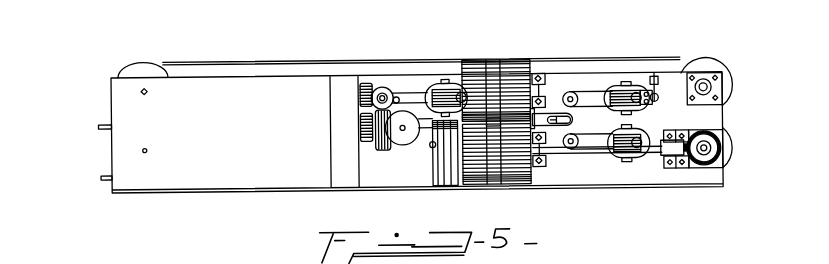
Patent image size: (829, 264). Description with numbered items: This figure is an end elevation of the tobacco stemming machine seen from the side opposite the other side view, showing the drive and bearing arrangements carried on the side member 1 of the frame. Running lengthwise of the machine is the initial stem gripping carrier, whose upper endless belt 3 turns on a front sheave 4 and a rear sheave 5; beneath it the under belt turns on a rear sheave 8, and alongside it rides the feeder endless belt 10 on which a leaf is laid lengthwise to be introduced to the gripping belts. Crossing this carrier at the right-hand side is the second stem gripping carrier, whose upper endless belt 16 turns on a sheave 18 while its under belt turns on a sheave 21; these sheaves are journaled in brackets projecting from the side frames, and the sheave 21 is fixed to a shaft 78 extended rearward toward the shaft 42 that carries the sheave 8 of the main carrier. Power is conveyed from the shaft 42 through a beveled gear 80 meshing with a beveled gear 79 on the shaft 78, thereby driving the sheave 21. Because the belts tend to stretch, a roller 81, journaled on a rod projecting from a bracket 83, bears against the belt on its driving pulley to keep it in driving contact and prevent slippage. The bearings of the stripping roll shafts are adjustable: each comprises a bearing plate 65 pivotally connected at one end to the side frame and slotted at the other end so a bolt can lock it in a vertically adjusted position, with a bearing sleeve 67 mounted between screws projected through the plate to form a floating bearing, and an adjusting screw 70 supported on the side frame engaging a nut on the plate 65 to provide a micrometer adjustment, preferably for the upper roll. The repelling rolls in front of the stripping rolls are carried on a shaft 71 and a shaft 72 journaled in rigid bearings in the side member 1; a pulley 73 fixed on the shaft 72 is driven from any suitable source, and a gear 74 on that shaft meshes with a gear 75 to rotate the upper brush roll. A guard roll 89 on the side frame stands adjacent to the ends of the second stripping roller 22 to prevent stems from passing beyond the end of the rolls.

The side member 1 is at (245, 186).
The upper endless belt 3 is at (253, 63).
The front sheave 4 is at (137, 67).
The rear sheave 5 is at (708, 66).
The rear sheave 8 is at (729, 172).
The feeder endless belt 10 is at (104, 130).
The upper endless belt 16 is at (493, 68).
The sheave 18 is at (513, 62).
The sheave 21 is at (530, 181).
The second stripping roller 22 is at (481, 133).
The shaft 42 is at (704, 154).
The bearing plate 65 is at (403, 96).
The bearing sleeve 67 is at (441, 88).
The adjusting screw 70 is at (656, 79).
The shaft 71 is at (386, 91).
The shaft 72 is at (403, 129).
The pulley 73 is at (396, 143).
The gear 74 is at (365, 139).
The gear 75 is at (378, 88).
The shaft 78 is at (583, 159).
The beveled gear 79 is at (676, 166).
The beveled gear 80 is at (724, 134).
The roller 81 is at (501, 134).
The bracket 83 is at (437, 178).
The guard roll 89 is at (548, 116).